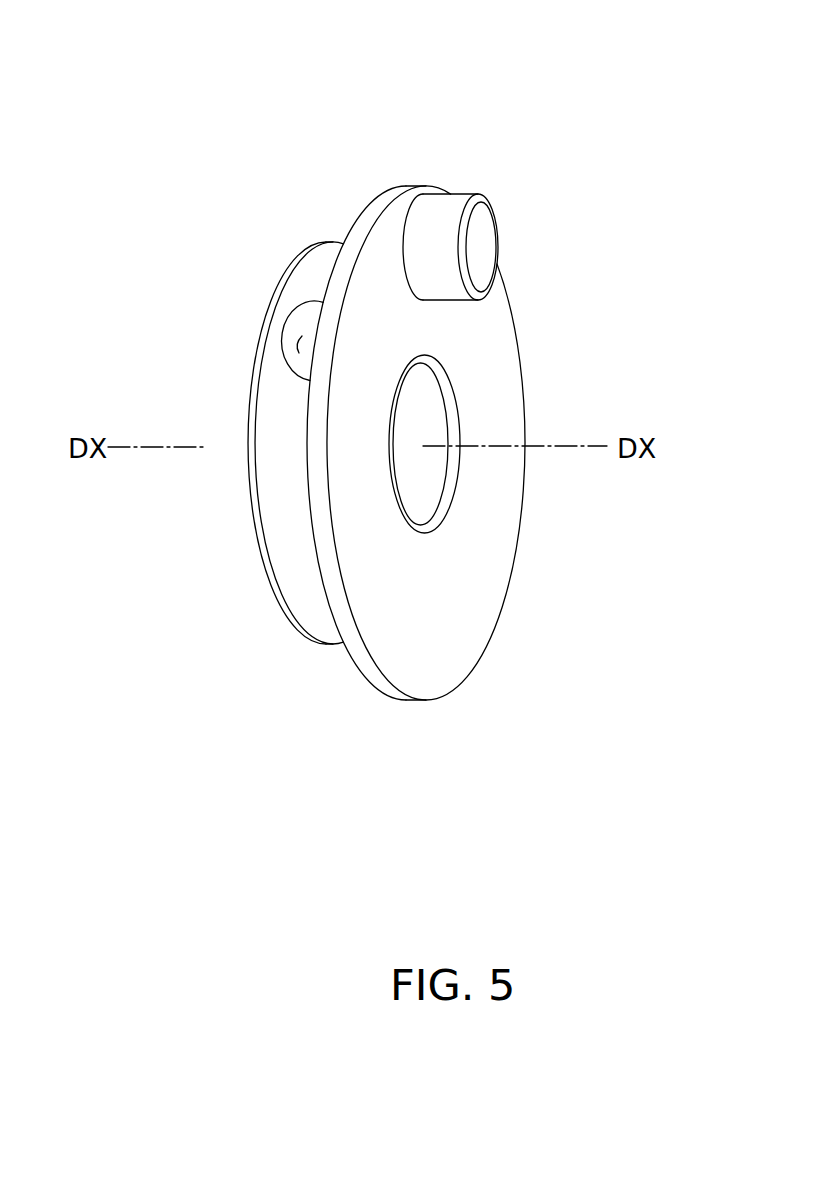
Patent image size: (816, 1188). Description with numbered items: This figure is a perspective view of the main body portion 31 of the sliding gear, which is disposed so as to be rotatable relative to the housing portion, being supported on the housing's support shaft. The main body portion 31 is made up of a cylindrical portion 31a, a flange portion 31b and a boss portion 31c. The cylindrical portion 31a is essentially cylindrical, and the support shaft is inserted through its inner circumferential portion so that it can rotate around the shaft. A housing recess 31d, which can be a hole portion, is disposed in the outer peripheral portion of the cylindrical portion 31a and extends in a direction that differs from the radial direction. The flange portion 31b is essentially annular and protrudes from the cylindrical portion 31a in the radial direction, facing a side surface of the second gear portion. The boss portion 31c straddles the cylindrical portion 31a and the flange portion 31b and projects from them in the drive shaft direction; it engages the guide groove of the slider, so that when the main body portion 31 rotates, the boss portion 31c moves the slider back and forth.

The main body portion 31 is at (523, 148).
The cylindrical portion 31a is at (293, 555).
The flange portion 31b is at (378, 682).
The boss portion 31c is at (487, 223).
The housing recess 31d is at (283, 364).